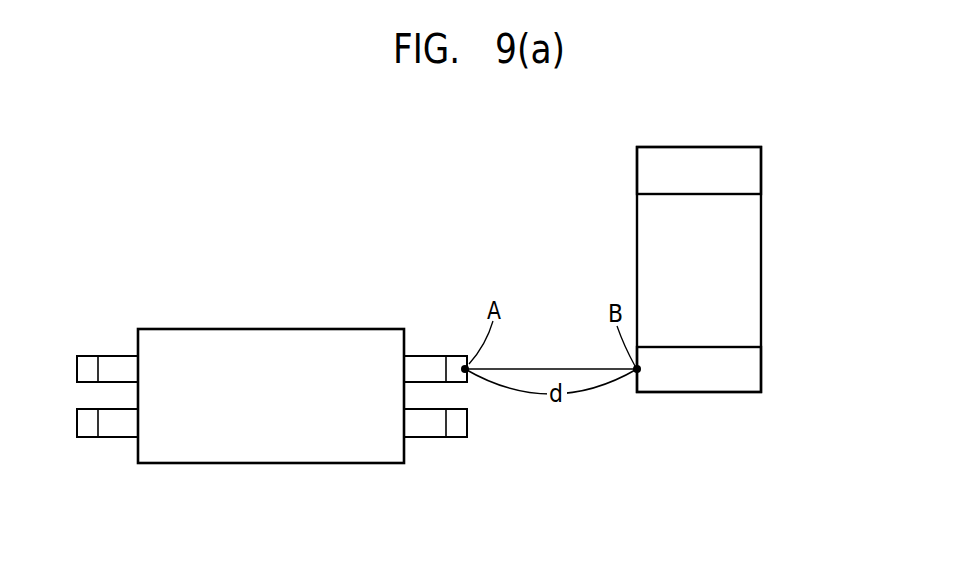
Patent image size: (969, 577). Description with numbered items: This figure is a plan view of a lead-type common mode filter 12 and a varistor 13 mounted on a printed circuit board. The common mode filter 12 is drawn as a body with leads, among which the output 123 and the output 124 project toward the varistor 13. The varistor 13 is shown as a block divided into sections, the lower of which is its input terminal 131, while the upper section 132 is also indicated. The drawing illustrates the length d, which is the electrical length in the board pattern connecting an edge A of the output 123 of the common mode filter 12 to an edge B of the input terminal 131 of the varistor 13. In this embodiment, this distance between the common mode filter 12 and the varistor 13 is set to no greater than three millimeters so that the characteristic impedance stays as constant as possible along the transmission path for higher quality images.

The common mode filter 12 is at (295, 310).
The output 123 is at (455, 355).
The output 124 is at (455, 438).
The varistor 13 is at (748, 266).
The input terminal 131 is at (762, 372).
The terminal portion of light receiving element 132 is at (761, 172).